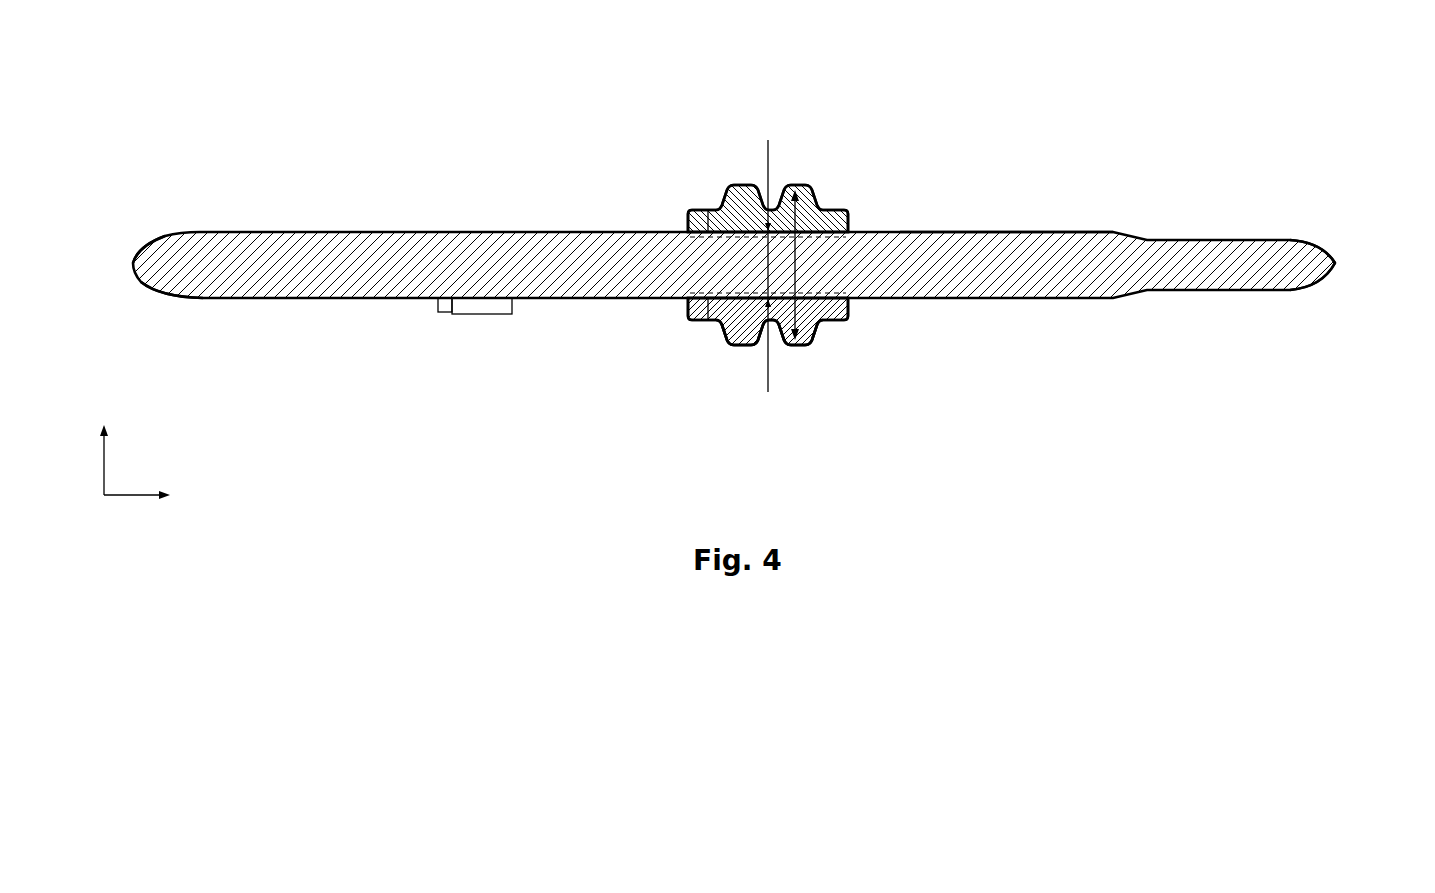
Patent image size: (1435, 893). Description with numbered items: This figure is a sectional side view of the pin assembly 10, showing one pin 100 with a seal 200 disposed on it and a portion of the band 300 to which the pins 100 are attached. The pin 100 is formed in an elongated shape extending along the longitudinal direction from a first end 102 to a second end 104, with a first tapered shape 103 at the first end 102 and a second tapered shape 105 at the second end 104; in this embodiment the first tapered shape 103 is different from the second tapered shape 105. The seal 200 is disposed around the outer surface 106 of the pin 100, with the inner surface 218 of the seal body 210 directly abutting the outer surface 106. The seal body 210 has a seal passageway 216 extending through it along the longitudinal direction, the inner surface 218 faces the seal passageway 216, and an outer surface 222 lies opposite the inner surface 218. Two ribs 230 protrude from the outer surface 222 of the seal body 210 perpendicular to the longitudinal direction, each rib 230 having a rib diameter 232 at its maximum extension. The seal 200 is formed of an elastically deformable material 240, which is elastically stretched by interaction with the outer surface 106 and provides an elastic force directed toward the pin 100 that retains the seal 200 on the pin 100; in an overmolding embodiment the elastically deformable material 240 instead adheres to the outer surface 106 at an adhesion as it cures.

The pin 100 is at (225, 82).
The pin assembly 10 is at (1046, 147).
The first end 102 is at (133, 260).
The first tapered shape 103 is at (165, 296).
The second end 104 is at (1335, 263).
The second tapered shape 105 is at (1298, 290).
The outer surface 106 is at (1032, 232).
The seal 200 is at (672, 180).
The seal body 210 is at (690, 305).
The seal passageway 216 is at (856, 218).
The inner surface 218 is at (707, 210).
The outer surface 222 is at (692, 322).
The rib 230 is at (745, 345).
The rib diameter 232 is at (797, 267).
The elastically deformable material 240 is at (690, 305).
The band 300 is at (445, 313).